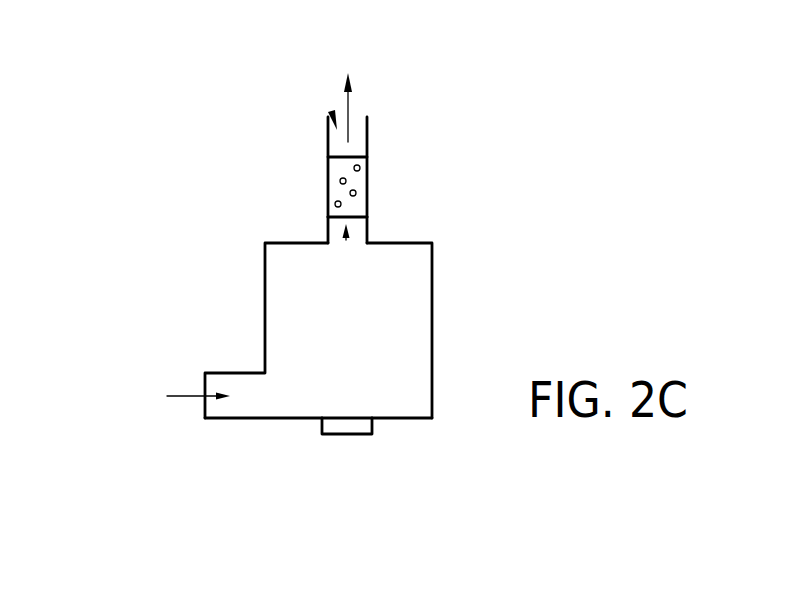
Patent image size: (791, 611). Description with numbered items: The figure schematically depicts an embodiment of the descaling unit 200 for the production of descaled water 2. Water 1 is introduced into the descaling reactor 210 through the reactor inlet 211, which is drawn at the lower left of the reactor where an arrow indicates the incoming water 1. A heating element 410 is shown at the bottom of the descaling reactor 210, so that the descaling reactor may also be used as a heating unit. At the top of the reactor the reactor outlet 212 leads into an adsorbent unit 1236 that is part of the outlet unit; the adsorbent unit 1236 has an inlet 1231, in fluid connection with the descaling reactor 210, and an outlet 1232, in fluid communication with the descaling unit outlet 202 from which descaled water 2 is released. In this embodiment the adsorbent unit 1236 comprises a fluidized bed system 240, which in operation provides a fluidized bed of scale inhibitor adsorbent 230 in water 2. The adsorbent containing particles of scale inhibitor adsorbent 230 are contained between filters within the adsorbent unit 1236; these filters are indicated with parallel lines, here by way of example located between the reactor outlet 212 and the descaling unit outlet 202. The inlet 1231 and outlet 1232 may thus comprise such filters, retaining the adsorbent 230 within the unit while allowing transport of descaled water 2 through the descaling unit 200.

The descaling unit 200 is at (128, 62).
The descaling reactor 210 is at (246, 293).
The reactor inlet 211 is at (248, 418).
The heating element 410 is at (350, 428).
The descaling unit outlet 202 is at (363, 138).
The reactor outlet 212 is at (355, 237).
The adsorbent unit 1236 is at (304, 181).
The fluidized bed system 240 is at (304, 212).
The scale inhibitor adsorbent 230 is at (356, 194).
The inlet 1231 is at (346, 240).
The outlet 1232 is at (331, 114).
The descaled water 2 is at (348, 103).
The water 1 is at (175, 396).